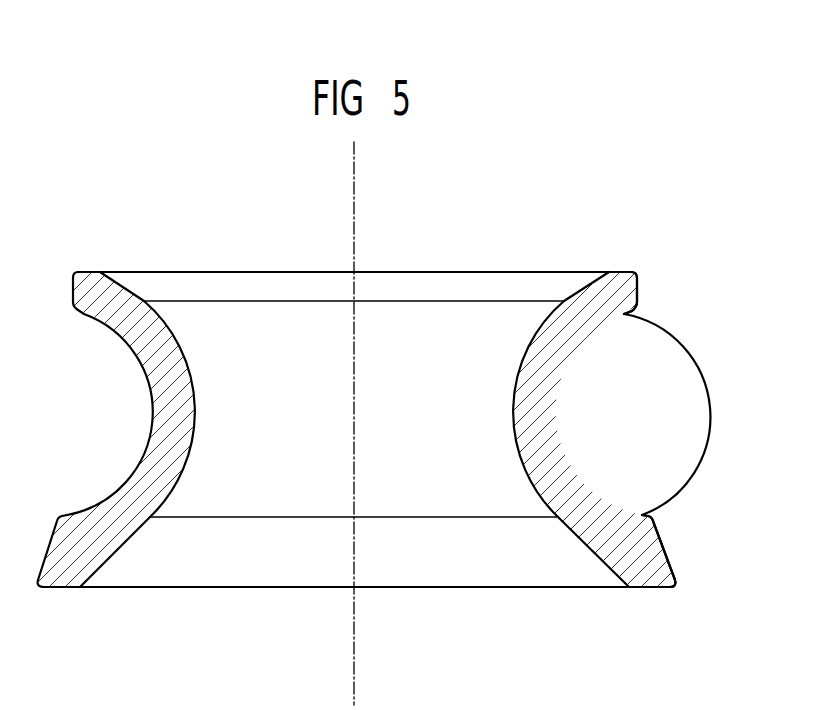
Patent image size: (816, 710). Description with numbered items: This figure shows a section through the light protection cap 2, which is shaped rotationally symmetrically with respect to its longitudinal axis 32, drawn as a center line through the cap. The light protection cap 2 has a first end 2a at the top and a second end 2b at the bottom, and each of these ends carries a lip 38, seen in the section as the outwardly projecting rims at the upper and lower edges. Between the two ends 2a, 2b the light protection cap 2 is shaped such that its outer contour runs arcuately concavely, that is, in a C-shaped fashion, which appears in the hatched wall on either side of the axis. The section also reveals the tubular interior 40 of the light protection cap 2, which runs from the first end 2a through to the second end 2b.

The light protection cap 2 is at (236, 232).
The first end 2a is at (512, 272).
The second end 2b is at (512, 588).
The longitudinal axis 32 is at (354, 172).
The lip 38 is at (638, 283).
The tubular interior 40 is at (424, 426).